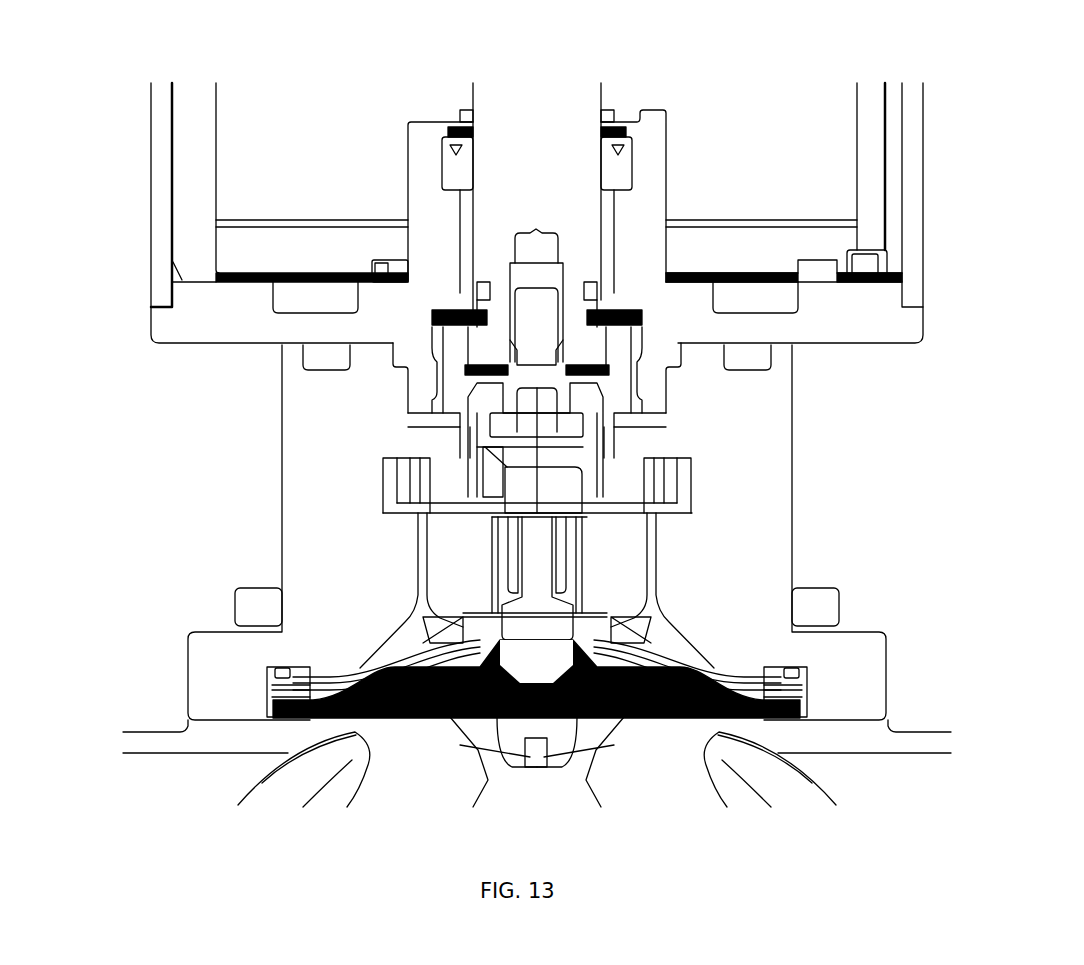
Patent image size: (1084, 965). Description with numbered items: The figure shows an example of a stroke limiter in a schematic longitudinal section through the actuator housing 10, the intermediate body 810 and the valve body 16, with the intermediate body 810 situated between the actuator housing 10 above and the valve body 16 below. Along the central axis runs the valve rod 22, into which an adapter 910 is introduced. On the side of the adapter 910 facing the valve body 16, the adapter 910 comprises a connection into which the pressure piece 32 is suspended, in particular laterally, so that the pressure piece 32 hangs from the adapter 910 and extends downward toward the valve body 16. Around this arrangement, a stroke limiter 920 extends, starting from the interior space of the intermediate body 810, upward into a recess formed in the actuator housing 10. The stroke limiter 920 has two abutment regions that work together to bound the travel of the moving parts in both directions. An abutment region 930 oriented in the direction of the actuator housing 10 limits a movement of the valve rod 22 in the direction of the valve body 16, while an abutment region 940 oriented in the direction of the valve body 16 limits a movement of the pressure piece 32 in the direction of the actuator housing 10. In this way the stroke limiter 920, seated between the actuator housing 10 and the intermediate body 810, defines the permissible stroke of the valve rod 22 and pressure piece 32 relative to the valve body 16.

The actuator housing 10 is at (200, 312).
The valve rod 22 is at (557, 148).
The adapter 910 is at (525, 330).
The abutment region 930 is at (480, 372).
The stroke limiter 920 is at (452, 428).
The intermediate body 810 is at (771, 497).
The pressure piece 32 is at (465, 562).
The abutment region 940 is at (648, 533).
The valve body 16 is at (232, 742).